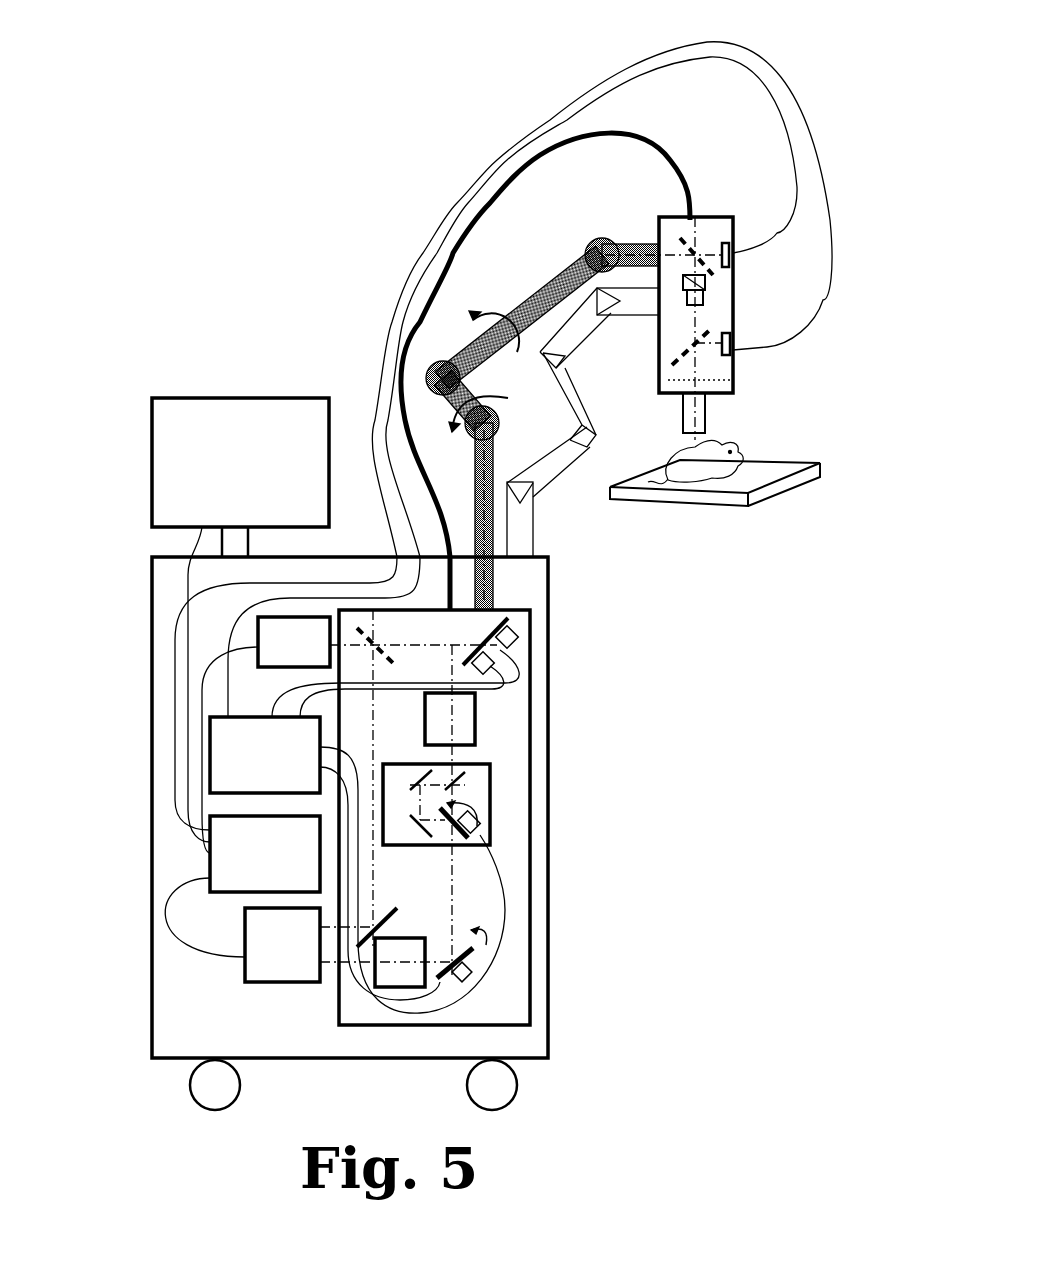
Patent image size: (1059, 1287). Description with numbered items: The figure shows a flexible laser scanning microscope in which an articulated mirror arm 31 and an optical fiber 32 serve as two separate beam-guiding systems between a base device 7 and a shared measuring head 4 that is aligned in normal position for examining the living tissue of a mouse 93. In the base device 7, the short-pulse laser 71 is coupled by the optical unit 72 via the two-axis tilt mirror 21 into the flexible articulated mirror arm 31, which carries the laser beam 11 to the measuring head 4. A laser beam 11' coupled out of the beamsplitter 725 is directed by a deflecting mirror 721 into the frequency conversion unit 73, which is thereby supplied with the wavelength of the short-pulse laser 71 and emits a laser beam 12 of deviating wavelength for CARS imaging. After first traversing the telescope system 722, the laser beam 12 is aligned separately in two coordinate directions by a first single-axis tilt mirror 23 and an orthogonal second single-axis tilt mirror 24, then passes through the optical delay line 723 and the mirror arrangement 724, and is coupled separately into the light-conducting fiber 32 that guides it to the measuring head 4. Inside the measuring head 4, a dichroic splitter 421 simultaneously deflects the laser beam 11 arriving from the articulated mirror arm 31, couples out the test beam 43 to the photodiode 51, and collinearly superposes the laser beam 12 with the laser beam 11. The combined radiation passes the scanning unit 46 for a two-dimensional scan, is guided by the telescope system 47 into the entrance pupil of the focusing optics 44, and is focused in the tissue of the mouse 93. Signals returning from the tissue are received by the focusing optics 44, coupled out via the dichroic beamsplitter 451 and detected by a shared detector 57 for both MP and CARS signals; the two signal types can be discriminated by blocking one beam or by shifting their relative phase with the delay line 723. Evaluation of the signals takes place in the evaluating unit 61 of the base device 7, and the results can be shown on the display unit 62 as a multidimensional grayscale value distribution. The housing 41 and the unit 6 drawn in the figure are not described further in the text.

The measuring head 4 is at (562, 132).
The dichroic splitter 421 is at (682, 235).
The laser beam 11 is at (526, 373).
The laser beam 12 is at (455, 897).
The test beam 43 is at (722, 250).
The articulated mirror arm 31 is at (523, 303).
The scanning unit 46 is at (681, 276).
The telescope system 47 is at (686, 295).
The photodiode 51 is at (735, 260).
The shared detector 57 is at (732, 333).
The optical fiber 32 is at (423, 323).
The display unit 62 is at (202, 405).
The dichroic beamsplitter 451 is at (673, 365).
The scan head housing 41 is at (720, 382).
The focusing optics 44 is at (687, 410).
The base device 7 is at (150, 573).
The beamsplitter 725 is at (385, 652).
The mouse 93 is at (710, 482).
The short-pulse laser 71 is at (263, 640).
The two-axis tilt mirror 21 is at (508, 634).
The computer 6 is at (210, 748).
The mirror arrangement 724 is at (477, 722).
The optical delay line 723 is at (492, 780).
The second single-axis tilt mirror 24 is at (485, 830).
The laser beam 11' is at (523, 778).
The evaluating unit 61 is at (213, 868).
The first single-axis tilt mirror 23 is at (475, 952).
The frequency conversion unit 73 is at (285, 977).
The deflecting mirror 721 is at (355, 955).
The optical unit 72 is at (530, 1012).
The telescope system 722 is at (395, 985).